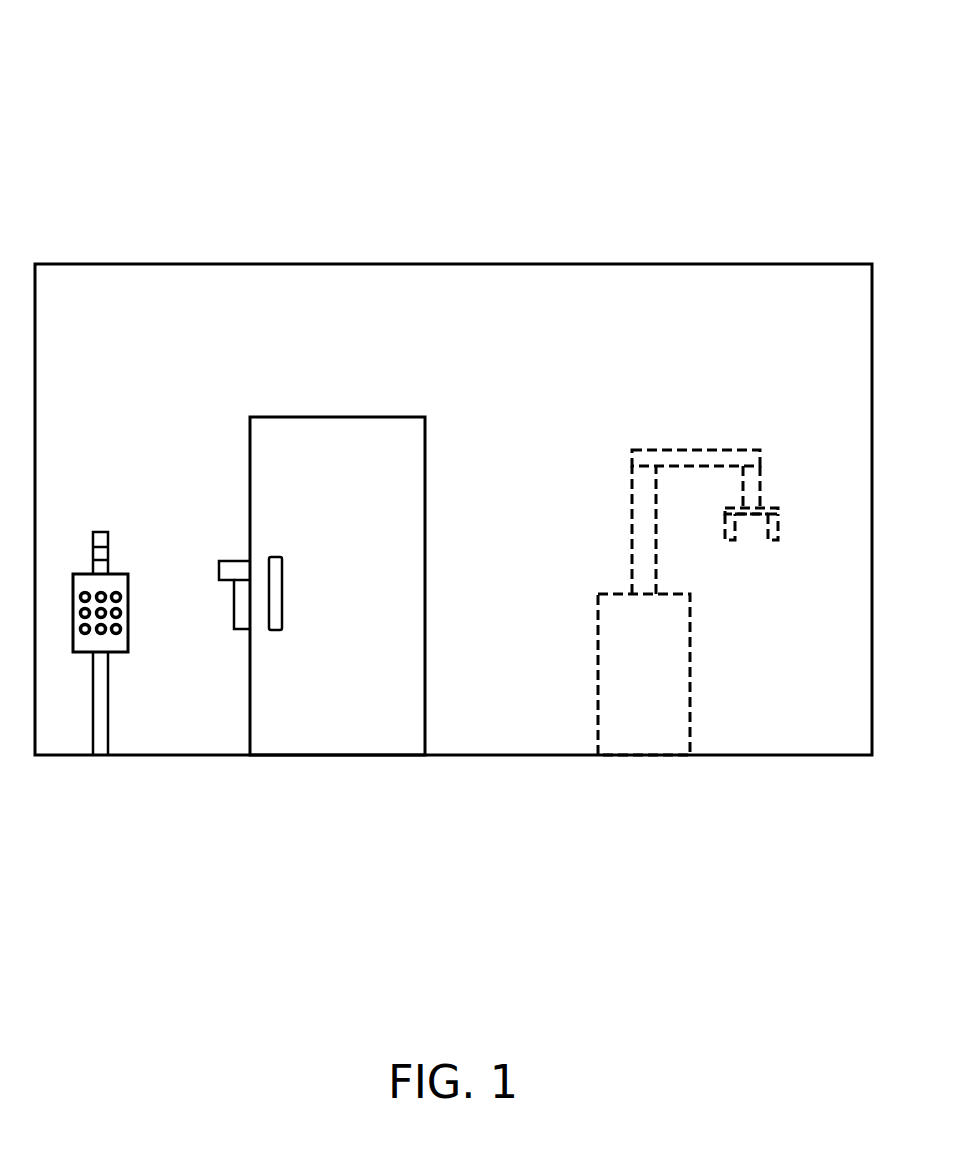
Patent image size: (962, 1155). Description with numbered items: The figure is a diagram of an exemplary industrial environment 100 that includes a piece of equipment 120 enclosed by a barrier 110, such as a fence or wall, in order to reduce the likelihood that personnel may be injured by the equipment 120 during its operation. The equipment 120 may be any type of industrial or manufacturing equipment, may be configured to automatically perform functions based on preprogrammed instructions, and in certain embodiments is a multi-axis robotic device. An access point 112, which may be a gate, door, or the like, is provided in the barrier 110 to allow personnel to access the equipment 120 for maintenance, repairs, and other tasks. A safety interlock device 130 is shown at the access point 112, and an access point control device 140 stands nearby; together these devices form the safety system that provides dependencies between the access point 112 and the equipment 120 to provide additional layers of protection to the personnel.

The industrial environment 100 is at (152, 119).
The barrier 110 is at (552, 263).
The access point 112 is at (426, 513).
The equipment 120 is at (691, 670).
The safety interlock device 130 is at (236, 560).
The access point control device 140 is at (129, 637).